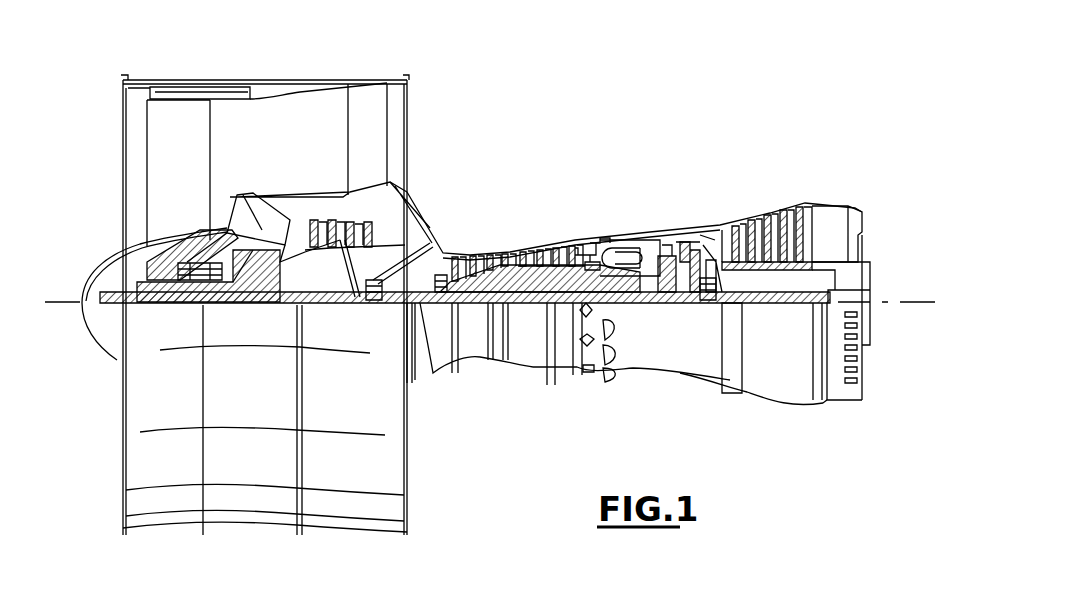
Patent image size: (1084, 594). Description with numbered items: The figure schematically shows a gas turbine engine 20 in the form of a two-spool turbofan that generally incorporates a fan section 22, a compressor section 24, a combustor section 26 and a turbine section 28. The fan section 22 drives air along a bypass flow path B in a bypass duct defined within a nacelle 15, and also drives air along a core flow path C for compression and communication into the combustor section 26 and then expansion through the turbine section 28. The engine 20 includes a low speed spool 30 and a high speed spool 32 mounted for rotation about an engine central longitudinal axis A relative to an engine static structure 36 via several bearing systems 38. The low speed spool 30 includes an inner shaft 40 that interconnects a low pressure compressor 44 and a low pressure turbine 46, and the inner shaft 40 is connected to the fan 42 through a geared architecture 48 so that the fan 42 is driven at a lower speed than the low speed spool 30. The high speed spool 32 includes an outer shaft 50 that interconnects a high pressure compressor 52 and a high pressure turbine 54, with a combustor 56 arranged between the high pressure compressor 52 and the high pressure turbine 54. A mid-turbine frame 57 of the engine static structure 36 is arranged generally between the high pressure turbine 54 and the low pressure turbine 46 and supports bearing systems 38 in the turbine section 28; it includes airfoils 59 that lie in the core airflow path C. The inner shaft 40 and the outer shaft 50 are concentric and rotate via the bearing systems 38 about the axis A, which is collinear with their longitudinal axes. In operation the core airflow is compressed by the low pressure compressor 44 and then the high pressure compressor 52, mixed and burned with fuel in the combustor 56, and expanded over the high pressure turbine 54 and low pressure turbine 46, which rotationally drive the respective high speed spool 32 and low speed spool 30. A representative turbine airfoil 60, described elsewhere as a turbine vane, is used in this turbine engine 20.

The nacelle 15 is at (268, 82).
The gas turbine engine 20 is at (630, 118).
The fan section 22 is at (209, 73).
The compressor section 24 is at (450, 225).
The combustor section 26 is at (623, 224).
The turbine section 28 is at (745, 188).
The low speed spool 30 is at (530, 310).
The high speed spool 32 is at (563, 253).
The engine static structure 36 is at (562, 376).
The bearing systems 38 is at (374, 288).
The inner shaft 40 is at (424, 307).
The fan 42 is at (195, 182).
The low pressure compressor 44 is at (388, 196).
The low pressure turbine 46 is at (775, 206).
The geared architecture 48 is at (270, 290).
The outer shaft 50 is at (630, 303).
The high pressure compressor 52 is at (517, 246).
The high pressure turbine 54 is at (703, 238).
The combustor 56 is at (624, 252).
The mid-turbine frame 57 is at (706, 270).
The airfoils 59 is at (725, 275).
The turbine airfoil 60 is at (718, 240).
The engine central longitudinal axis A is at (935, 302).
The bypass flow path B is at (240, 142).
The core flow path C is at (275, 219).